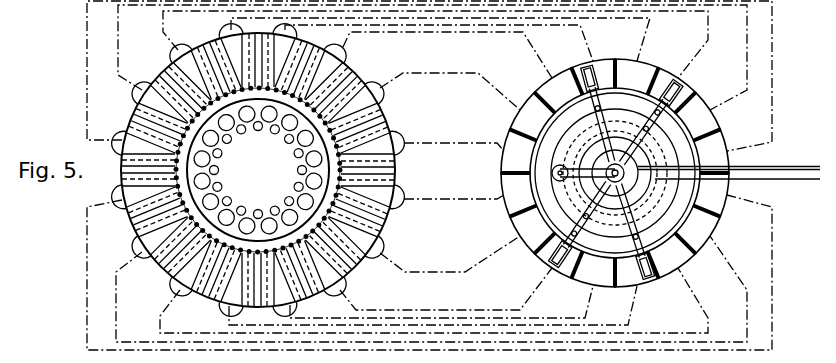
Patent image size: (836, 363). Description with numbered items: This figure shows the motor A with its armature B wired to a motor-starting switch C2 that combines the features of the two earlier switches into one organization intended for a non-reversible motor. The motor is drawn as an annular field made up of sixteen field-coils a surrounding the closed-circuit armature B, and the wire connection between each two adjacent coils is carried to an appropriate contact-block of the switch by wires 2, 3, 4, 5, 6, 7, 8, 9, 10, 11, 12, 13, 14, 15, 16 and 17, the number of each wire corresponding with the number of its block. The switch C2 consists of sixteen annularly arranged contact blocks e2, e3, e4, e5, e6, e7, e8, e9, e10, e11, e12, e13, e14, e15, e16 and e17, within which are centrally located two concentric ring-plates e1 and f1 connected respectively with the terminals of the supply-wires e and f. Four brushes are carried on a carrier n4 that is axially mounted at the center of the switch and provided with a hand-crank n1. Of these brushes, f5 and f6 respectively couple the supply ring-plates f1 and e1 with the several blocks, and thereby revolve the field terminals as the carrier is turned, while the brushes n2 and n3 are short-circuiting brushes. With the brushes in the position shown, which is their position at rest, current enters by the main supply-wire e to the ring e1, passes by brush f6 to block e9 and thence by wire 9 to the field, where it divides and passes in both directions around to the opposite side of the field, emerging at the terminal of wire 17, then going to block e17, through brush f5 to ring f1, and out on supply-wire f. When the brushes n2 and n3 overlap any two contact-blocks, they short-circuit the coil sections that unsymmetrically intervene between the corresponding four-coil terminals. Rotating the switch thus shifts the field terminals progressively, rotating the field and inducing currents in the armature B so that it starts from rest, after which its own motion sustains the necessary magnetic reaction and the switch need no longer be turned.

The motor A is at (250, 170).
The armature B is at (258, 170).
The starting switch C2 is at (660, 169).
The field-coils a is at (258, 170).
The wire 2 is at (447, 55).
The wire 3 is at (450, 94).
The wire 4 is at (454, 152).
The wire 5 is at (454, 205).
The wire 6 is at (450, 262).
The wire 7 is at (446, 289).
The wire 8 is at (441, 303).
The wire 9 is at (426, 308).
The wire 10 is at (435, 300).
The wire 11 is at (432, 289).
The wire 12 is at (431, 272).
The wire 13 is at (430, 75).
The wire 14 is at (432, 57).
The wire 15 is at (435, 44).
The wire 16 is at (440, 39).
The wire 17 is at (439, 43).
The supply-wire e is at (737, 186).
The supply-wire f is at (740, 158).
The ring-plate e1 is at (592, 158).
The contact-block e2 is at (558, 90).
The contact-block e3 is at (532, 116).
The contact-block e4 is at (519, 151).
The contact-block e5 is at (519, 195).
The contact-block e6 is at (532, 230).
The contact-block e7 is at (553, 262).
The contact-block e8 is at (593, 270).
The contact-block e9 is at (637, 270).
The contact-block e10 is at (672, 255).
The contact-block e11 is at (697, 230).
The contact-block e12 is at (712, 195).
The contact-block e13 is at (712, 151).
The contact-block e14 is at (697, 116).
The contact-block e15 is at (668, 84).
The contact-block e16 is at (637, 77).
The contact-block e17 is at (607, 63).
The ring-plate f1 is at (658, 163).
The brush f5 is at (587, 70).
The brush f6 is at (650, 278).
The hand-crank n1 is at (562, 180).
The brush n2 is at (684, 92).
The brush n3 is at (560, 266).
The carrier n4 is at (615, 165).